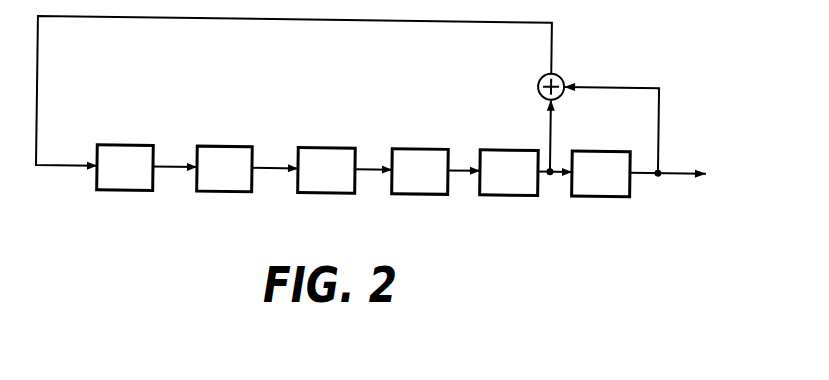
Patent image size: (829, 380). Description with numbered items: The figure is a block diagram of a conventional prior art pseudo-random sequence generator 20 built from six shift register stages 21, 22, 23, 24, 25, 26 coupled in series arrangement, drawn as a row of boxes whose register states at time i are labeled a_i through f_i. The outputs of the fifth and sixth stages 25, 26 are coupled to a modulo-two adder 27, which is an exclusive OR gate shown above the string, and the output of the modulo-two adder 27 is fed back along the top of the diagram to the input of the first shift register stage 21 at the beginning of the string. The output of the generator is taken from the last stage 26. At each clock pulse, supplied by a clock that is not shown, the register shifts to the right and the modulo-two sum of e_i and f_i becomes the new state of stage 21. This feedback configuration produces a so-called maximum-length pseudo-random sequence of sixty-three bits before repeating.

The pseudo-random sequence generator 20 is at (290, 77).
The shift register stage 21 is at (120, 181).
The shift register stage 22 is at (230, 181).
The shift register stage 23 is at (324, 182).
The shift register stage 24 is at (422, 181).
The shift register stage 25 is at (509, 182).
The shift register stage 26 is at (611, 182).
The modulo-2 adder 27 is at (560, 71).